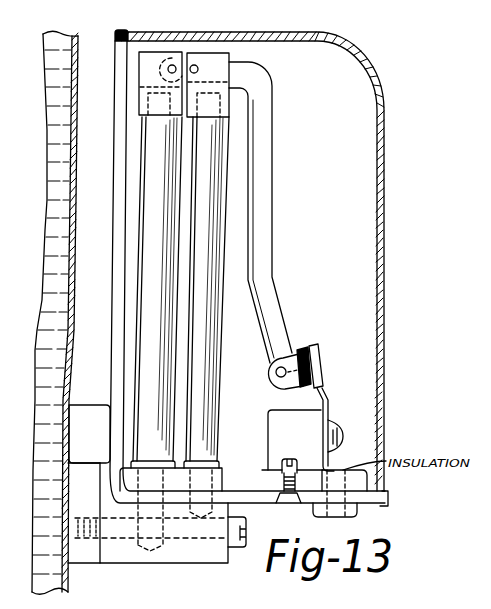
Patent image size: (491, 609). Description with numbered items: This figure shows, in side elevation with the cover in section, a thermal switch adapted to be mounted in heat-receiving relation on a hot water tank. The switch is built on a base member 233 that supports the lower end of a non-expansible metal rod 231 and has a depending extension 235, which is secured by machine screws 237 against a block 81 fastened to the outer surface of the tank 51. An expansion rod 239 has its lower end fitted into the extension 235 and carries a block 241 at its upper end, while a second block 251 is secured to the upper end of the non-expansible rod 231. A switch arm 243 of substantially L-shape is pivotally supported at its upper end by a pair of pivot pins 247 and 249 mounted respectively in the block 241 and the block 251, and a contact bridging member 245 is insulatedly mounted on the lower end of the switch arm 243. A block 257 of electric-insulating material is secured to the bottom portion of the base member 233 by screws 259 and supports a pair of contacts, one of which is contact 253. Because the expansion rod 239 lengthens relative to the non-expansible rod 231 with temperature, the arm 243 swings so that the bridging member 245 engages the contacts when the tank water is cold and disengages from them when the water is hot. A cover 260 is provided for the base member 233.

The tank 51 is at (72, 319).
The cover 260 is at (386, 243).
The base member 233 is at (108, 410).
The block 241 is at (139, 62).
The pivot pin 247 is at (172, 65).
The pivot pin 249 is at (194, 65).
The block 251 is at (229, 113).
The switch arm 243 is at (273, 182).
The expansion rod 239 is at (137, 260).
The non-expansible metal rod 231 is at (218, 393).
The contact bridging member 245 is at (303, 347).
The contact 253 is at (320, 354).
The block of electric-insulating material 257 is at (268, 439).
The screws 259 is at (282, 469).
The depending extension 235 is at (172, 563).
The block 81 is at (83, 563).
The machine screws 237 is at (237, 547).